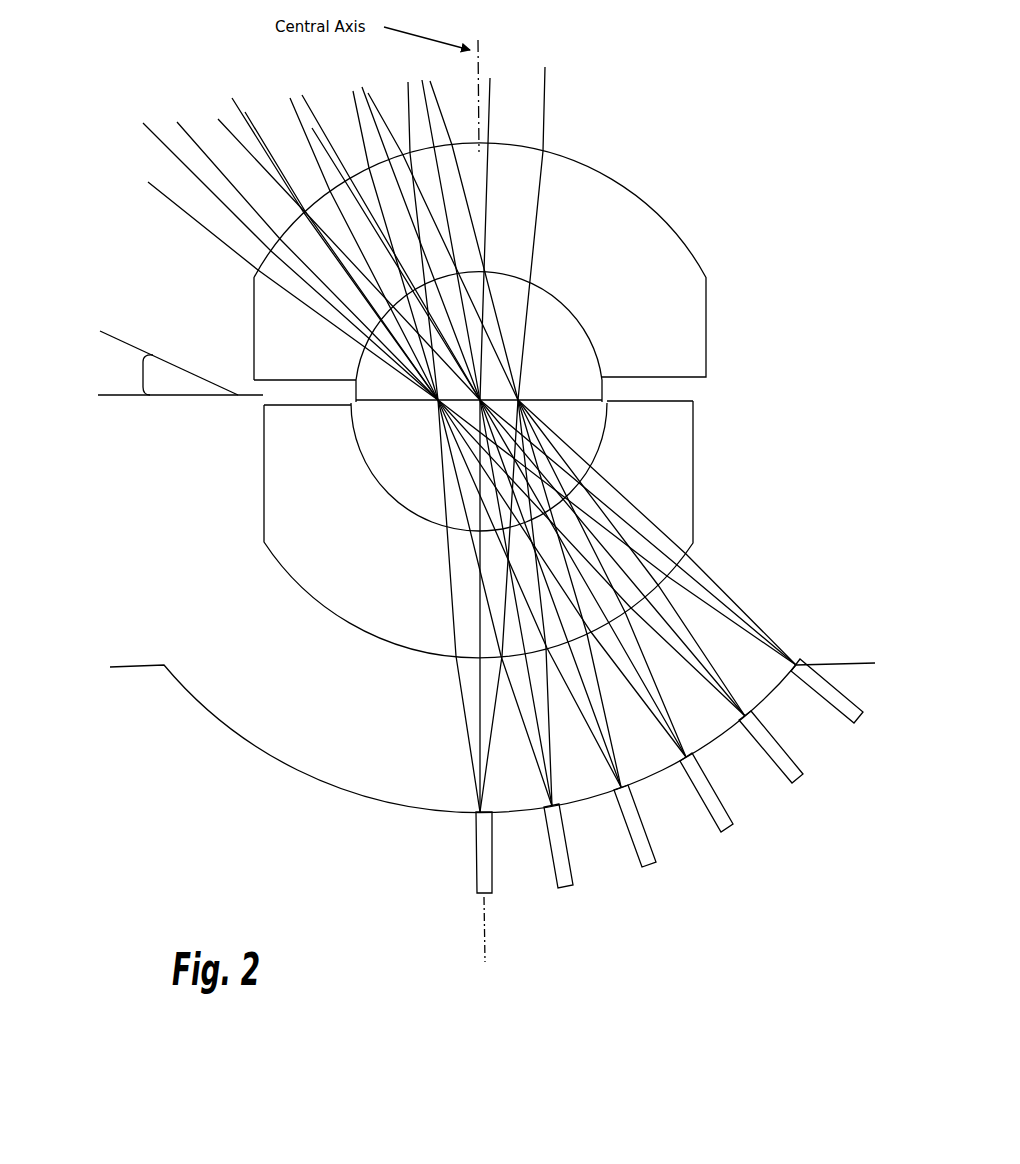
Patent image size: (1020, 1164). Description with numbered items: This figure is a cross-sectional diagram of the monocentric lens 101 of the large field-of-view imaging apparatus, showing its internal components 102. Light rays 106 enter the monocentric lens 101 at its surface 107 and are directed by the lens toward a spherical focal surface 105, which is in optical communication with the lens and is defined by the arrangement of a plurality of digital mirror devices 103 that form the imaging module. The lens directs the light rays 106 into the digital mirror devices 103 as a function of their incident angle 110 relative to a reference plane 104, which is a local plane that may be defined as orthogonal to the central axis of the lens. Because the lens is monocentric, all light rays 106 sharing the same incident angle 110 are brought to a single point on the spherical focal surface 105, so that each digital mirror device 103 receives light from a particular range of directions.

The monocentric lens 101 is at (755, 145).
The internal components 102 is at (567, 327).
The digital mirror devices (DMDs) 103 is at (855, 728).
The reference plane 104 is at (175, 397).
The spherical focal surface 105 is at (228, 720).
The light rays 106 is at (212, 190).
The surface of the monocentric lens 107 is at (612, 176).
The incident angle 110 is at (132, 373).